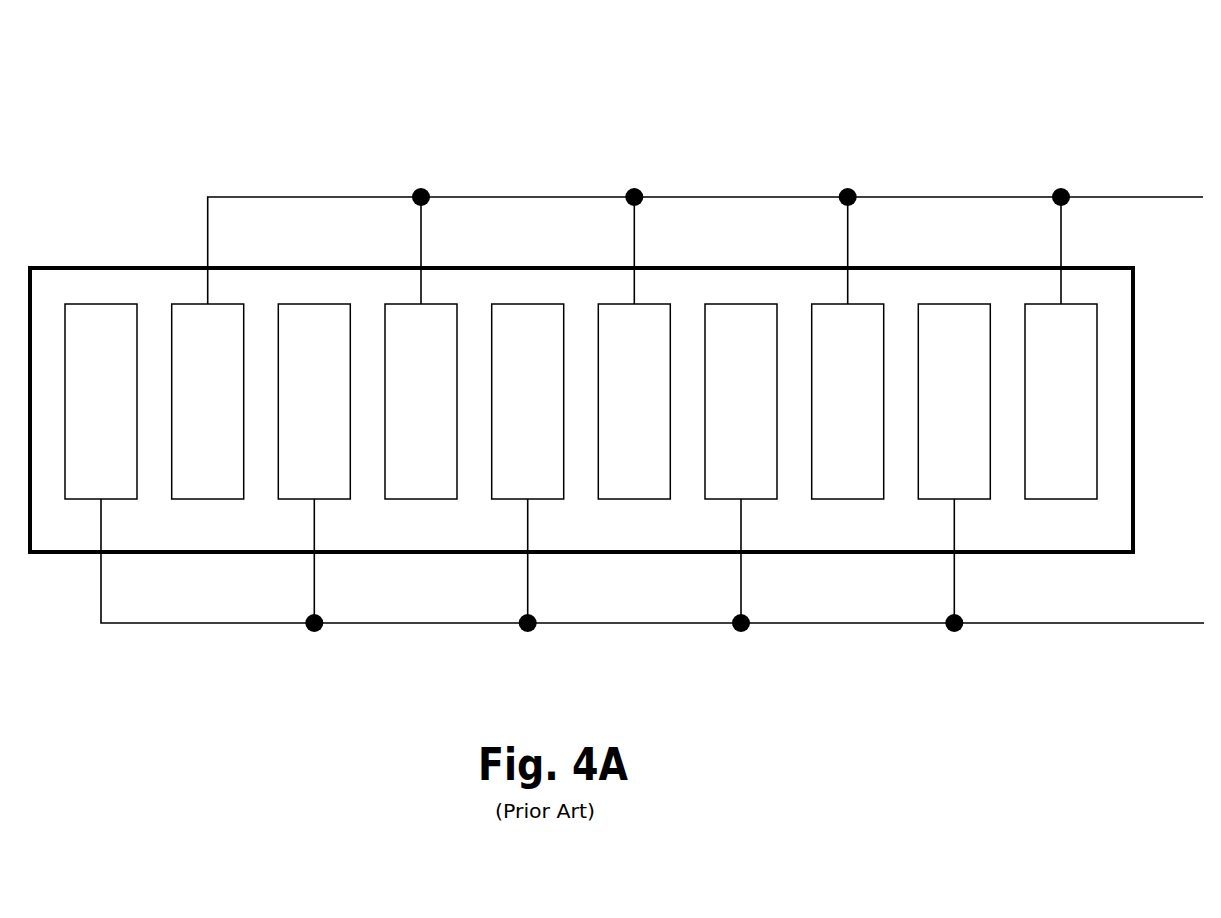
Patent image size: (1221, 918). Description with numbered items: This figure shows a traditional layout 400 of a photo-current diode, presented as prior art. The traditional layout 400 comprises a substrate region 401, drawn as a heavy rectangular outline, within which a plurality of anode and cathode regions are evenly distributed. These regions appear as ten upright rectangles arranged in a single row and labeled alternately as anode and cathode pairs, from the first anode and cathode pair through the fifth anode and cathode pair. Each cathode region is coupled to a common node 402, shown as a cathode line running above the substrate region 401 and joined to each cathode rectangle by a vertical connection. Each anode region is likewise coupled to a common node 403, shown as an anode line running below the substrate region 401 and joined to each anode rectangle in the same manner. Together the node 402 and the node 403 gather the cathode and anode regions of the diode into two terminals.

The traditional layout 400 is at (581, 52).
The substrate region 401 is at (119, 267).
The node 402 is at (261, 197).
The node 403 is at (191, 623).